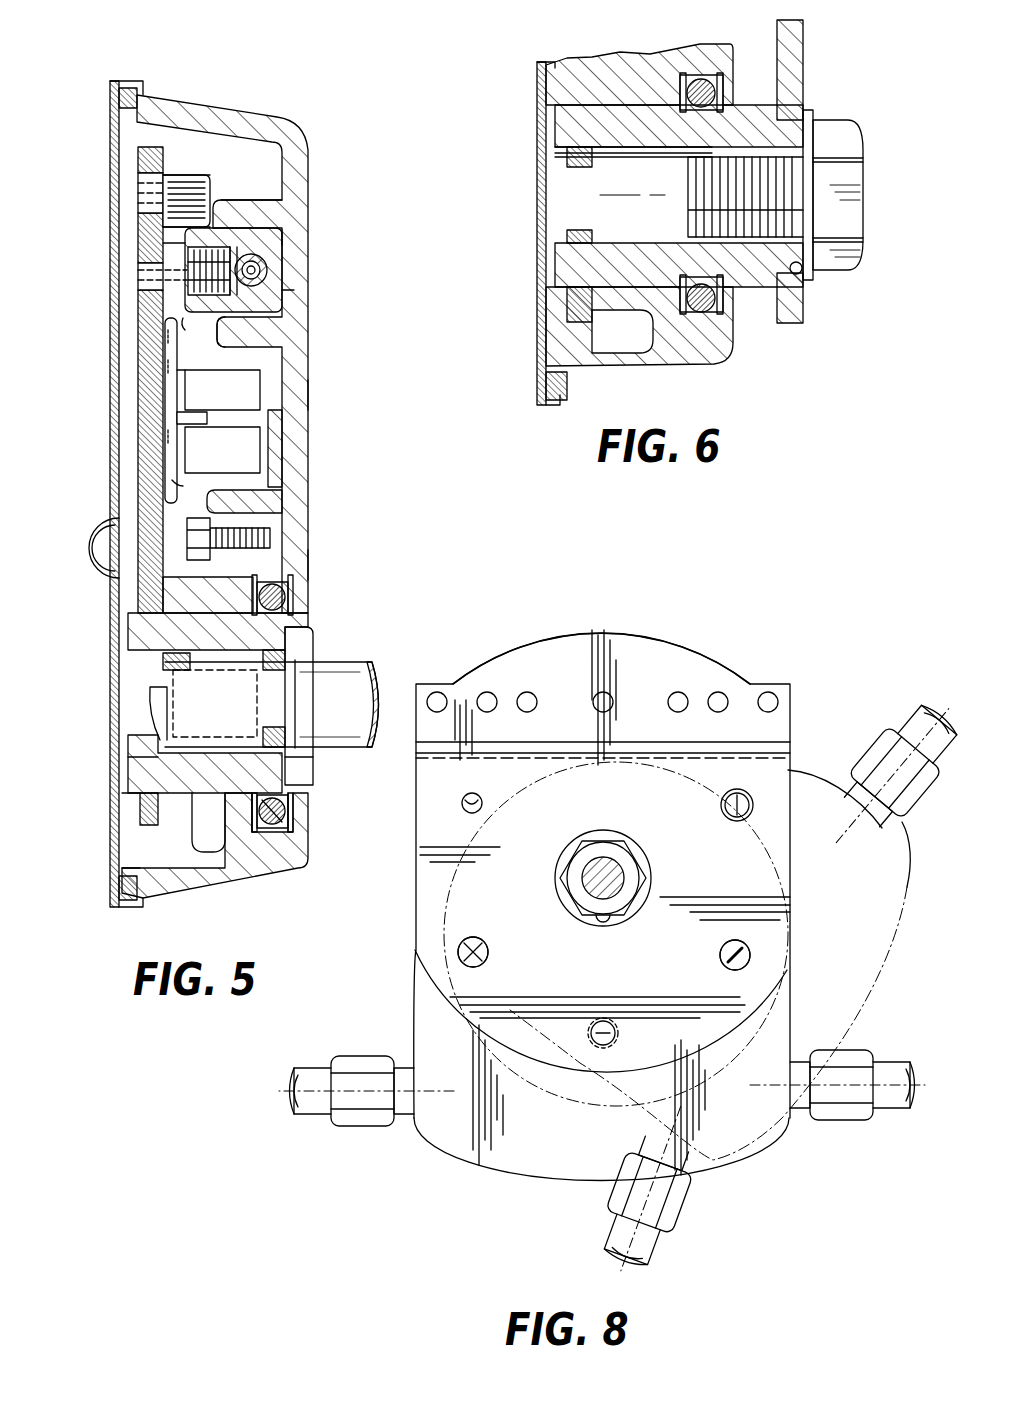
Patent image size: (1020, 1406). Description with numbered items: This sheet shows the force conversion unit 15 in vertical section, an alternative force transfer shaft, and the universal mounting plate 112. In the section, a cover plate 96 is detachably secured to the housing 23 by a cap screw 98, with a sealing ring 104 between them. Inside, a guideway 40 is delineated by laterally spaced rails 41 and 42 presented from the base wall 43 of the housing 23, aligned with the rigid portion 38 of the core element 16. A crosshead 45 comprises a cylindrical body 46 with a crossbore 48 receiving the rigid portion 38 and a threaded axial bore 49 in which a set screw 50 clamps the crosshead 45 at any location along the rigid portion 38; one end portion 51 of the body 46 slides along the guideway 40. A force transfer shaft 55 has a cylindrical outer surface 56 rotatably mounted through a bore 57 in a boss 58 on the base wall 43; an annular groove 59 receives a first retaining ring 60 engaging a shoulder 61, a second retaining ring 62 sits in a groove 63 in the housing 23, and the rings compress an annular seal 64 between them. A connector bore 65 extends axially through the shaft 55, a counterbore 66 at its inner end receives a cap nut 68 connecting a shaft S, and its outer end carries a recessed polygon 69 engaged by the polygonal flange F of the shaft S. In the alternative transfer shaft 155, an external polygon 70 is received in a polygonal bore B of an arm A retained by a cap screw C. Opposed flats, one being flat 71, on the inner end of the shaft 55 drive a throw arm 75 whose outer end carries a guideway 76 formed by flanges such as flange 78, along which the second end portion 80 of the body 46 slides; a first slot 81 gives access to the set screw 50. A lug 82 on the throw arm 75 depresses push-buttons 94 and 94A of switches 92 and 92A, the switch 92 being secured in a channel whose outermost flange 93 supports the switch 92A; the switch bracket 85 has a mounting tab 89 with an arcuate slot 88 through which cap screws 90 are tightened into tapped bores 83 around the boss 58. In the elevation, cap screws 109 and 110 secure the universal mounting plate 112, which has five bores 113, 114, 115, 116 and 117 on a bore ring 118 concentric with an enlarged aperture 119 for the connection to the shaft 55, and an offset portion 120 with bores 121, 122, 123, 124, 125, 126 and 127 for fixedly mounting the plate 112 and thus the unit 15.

In FIG. 5, the force conversion unit 15 is at (318, 565).
In FIG. 8, the force conversion unit 15 is at (528, 1190).
In FIG. 5, the core element 16 is at (272, 257).
In FIG. 5, the housing 23 is at (312, 397).
In FIG. 5, the rigid portion 38 is at (284, 291).
In FIG. 5, the guideway 40 is at (208, 220).
In FIG. 5, the rail 41 is at (262, 208).
In FIG. 5, the rail 42 is at (240, 330).
In FIG. 5, the base wall 43 is at (295, 457).
In FIG. 5, the crosshead 45 is at (183, 320).
In FIG. 5, the cylindrical body 46 is at (242, 235).
In FIG. 5, the crossbore 48 is at (265, 273).
In FIG. 5, the threaded axial bore 49 is at (220, 247).
In FIG. 5, the set screw 50 is at (187, 268).
In FIG. 5, the end portion 51 is at (287, 236).
In FIG. 5, the force transfer shaft 55 is at (185, 775).
In FIG. 8, the force transfer shaft 55 is at (610, 835).
In FIG. 5, the cylindrical outer surface 56 is at (197, 820).
In FIG. 5, the bore 57 is at (185, 620).
In FIG. 5, the boss 58 is at (175, 806).
In FIG. 5, the annular groove 59 is at (253, 785).
In FIG. 5, the first retaining ring 60 is at (255, 810).
In FIG. 5, the shoulder 61 is at (277, 848).
In FIG. 5, the second retaining ring 62 is at (300, 810).
In FIG. 5, the groove 63 is at (300, 845).
In FIG. 5, the annular seal 64 is at (285, 840).
In FIG. 5, the connector bore 65 is at (275, 668).
In FIG. 5, the counterbore 66 is at (175, 660).
In FIG. 5, the cap nut 68 is at (150, 688).
In FIG. 5, the recessed polygon 69 is at (313, 640).
In FIG. 8, the recessed polygon 69 is at (640, 897).
In FIG. 6, the external polygon 70 is at (790, 115).
In FIG. 5, the flat 71 is at (135, 770).
In FIG. 5, the throw arm 75 is at (150, 397).
In FIG. 5, the guideway 76 is at (197, 172).
In FIG. 5, the flange 78 is at (197, 190).
In FIG. 5, the second end portion 80 is at (185, 243).
In FIG. 5, the first slot 81 is at (145, 192).
In FIG. 5, the lug 82 is at (177, 482).
In FIG. 5, the tapped bores 83 is at (250, 540).
In FIG. 5, the switch bracket 85 is at (272, 432).
In FIG. 5, the arcuate slot 88 is at (225, 510).
In FIG. 5, the mounting tab 89 is at (210, 583).
In FIG. 5, the cap screws 90 is at (195, 540).
In FIG. 5, the push-button switch 92 is at (222, 450).
In FIG. 5, the switch 92A is at (222, 390).
In FIG. 5, the outermost flange 93 is at (207, 418).
In FIG. 5, the push-button 94 is at (175, 433).
In FIG. 5, the push-button 94A is at (180, 373).
In FIG. 5, the cover plate 96 is at (110, 130).
In FIG. 5, the cap screw 98 is at (105, 522).
In FIG. 5, the sealing ring 104 is at (130, 88).
In FIG. 8, the cap screw 109 is at (478, 967).
In FIG. 8, the cap screw 110 is at (730, 970).
In FIG. 8, the universal mounting plate 112 is at (740, 660).
In FIG. 8, the bore 113 is at (480, 802).
In FIG. 8, the bore 114 is at (737, 812).
In FIG. 8, the bore 115 is at (473, 937).
In FIG. 8, the bore 116 is at (722, 956).
In FIG. 8, the bore 117 is at (616, 1035).
In FIG. 8, the bore ring 118 is at (447, 892).
In FIG. 8, the enlarged aperture 119 is at (600, 920).
In FIG. 8, the offset portion 120 is at (565, 650).
In FIG. 8, the bore 121 is at (440, 700).
In FIG. 8, the bore 122 is at (492, 700).
In FIG. 8, the bore 123 is at (630, 726).
In FIG. 8, the bore 124 is at (605, 700).
In FIG. 8, the bore 125 is at (727, 787).
In FIG. 8, the bore 126 is at (715, 700).
In FIG. 8, the bore 127 is at (770, 702).
In FIG. 6, the transfer shaft 155 is at (583, 257).
In FIG. 6, the arm A is at (790, 60).
In FIG. 6, the polygonal bore B is at (803, 270).
In FIG. 6, the cap screw C is at (845, 140).
In FIG. 5, the polygonal flange F is at (300, 767).
In FIG. 8, the polygonal flange F is at (583, 865).
In FIG. 5, the shaft S is at (360, 672).
In FIG. 8, the shaft S is at (620, 878).